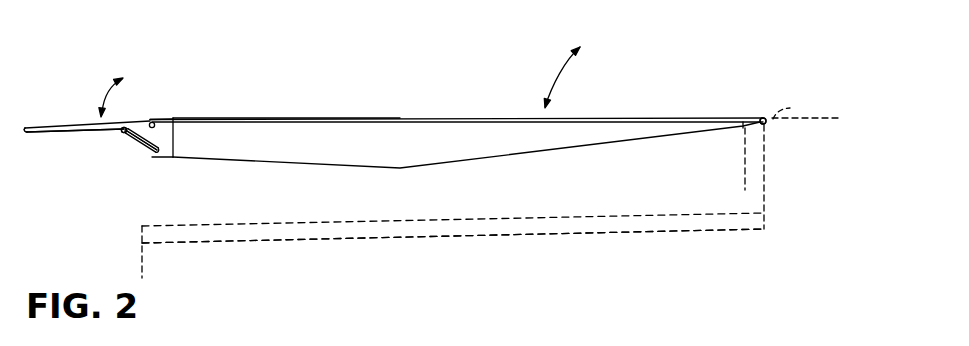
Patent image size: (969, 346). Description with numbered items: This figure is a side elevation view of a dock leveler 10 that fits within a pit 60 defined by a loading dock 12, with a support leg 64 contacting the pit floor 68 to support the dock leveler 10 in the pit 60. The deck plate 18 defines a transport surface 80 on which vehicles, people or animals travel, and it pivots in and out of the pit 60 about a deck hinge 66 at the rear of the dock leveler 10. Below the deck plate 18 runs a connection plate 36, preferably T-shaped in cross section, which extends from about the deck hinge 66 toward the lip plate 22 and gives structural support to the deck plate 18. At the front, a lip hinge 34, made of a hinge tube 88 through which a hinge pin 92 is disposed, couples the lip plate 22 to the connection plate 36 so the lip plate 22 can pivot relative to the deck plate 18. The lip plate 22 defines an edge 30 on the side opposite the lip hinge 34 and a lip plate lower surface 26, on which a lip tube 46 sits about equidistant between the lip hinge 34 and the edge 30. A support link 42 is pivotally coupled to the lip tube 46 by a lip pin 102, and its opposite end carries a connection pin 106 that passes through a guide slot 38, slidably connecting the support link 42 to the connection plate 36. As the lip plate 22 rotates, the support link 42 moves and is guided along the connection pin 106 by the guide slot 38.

The dock leveler 10 is at (618, 48).
The loading dock 12 is at (813, 105).
The deck plate 18 is at (432, 118).
The lip plate 22 is at (93, 120).
The lip plate lower surface 26 is at (72, 136).
The edge 30 is at (26, 131).
The lip hinge 34 is at (144, 117).
The connection plate 36 is at (309, 153).
The guide slot 38 is at (145, 150).
The support link 42 is at (136, 152).
The lip tube 46 is at (122, 132).
The pit 60 is at (632, 188).
The support leg 64 is at (743, 145).
The deck hinge 66 is at (761, 121).
The pit floor 68 is at (612, 222).
The transport surface 80 is at (317, 118).
The hinge tube 88 is at (173, 121).
The hinge pin 92 is at (153, 125).
The lip pin 102 is at (125, 134).
The connection pin 106 is at (160, 150).